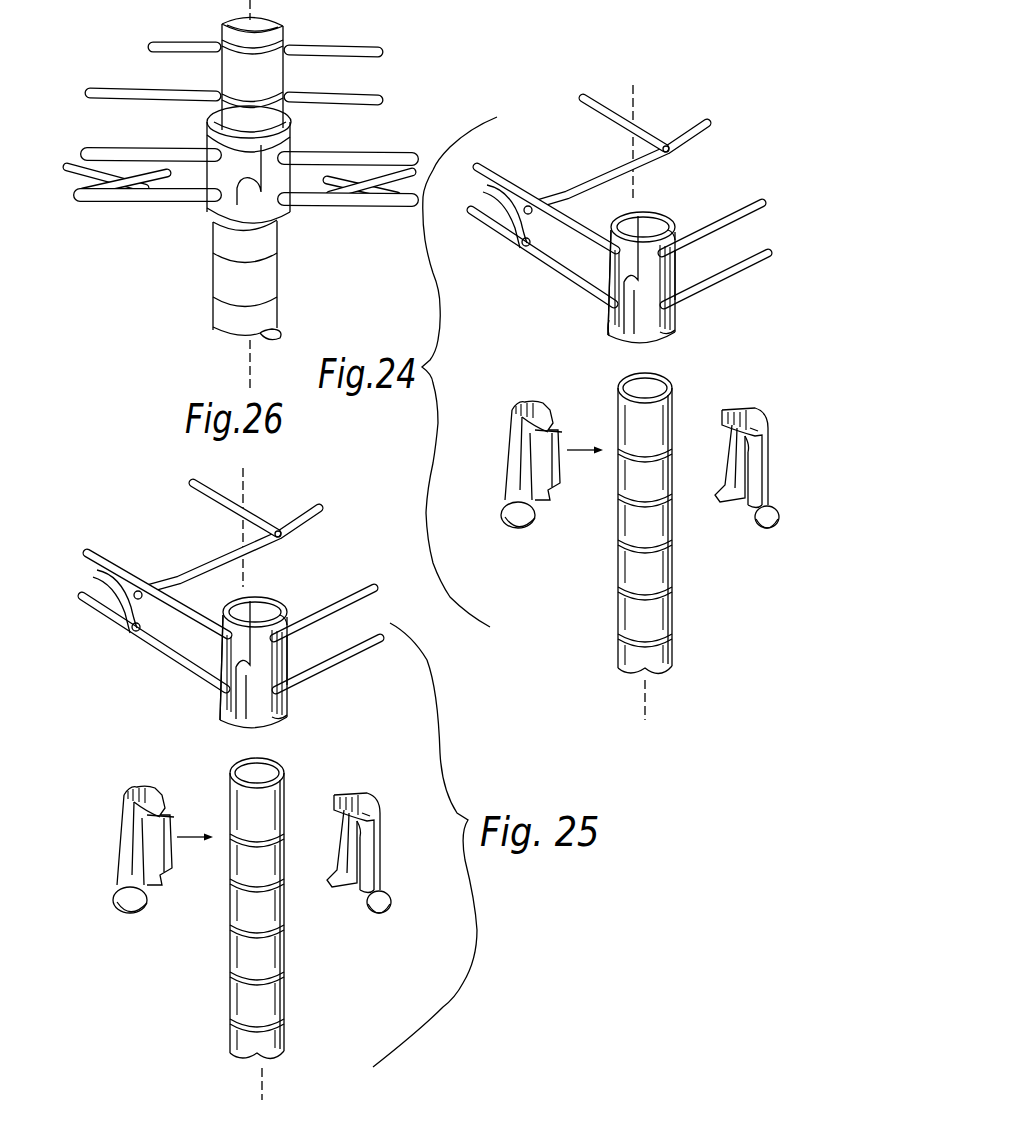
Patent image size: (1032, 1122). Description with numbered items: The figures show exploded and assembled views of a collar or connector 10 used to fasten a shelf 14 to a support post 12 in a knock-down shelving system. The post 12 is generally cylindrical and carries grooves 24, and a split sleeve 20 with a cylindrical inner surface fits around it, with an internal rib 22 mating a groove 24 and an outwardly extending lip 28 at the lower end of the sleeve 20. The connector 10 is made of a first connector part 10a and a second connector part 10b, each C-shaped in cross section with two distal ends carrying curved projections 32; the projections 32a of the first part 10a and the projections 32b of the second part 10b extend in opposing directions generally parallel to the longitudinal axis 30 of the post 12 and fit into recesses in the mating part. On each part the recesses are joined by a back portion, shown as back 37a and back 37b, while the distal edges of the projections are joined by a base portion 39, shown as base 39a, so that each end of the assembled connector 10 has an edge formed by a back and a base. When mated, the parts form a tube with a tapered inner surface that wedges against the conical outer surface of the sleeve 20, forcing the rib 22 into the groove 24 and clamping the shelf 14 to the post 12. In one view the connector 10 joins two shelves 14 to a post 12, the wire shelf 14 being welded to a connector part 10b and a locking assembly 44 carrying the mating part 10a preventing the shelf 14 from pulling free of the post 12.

In FIG. 26, the collar or connector 10 is at (222, 215).
In FIG. 24, the first connector part 10a is at (672, 331).
In FIG. 25, the first connector part 10a is at (288, 717).
In FIG. 24, the second connector part 10b is at (613, 329).
In FIG. 25, the second connector part 10b is at (228, 714).
In FIG. 26, the support post 12 is at (220, 68).
In FIG. 24, the support post 12 is at (617, 557).
In FIG. 25, the support post 12 is at (230, 953).
In FIG. 26, the shelf 14 is at (390, 157).
In FIG. 24, the shelf 14 is at (650, 127).
In FIG. 25, the shelf 14 is at (253, 515).
In FIG. 26, the sleeve 20 is at (282, 98).
In FIG. 24, the sleeve 20 is at (511, 470).
In FIG. 25, the sleeve 20 is at (122, 857).
In FIG. 24, the rib 22 is at (552, 434).
In FIG. 25, the rib 22 is at (164, 819).
In FIG. 26, the groove 24 is at (277, 50).
In FIG. 24, the groove 24 is at (673, 587).
In FIG. 25, the groove 24 is at (282, 970).
In FIG. 26, the lip 28 is at (268, 212).
In FIG. 24, the lip 28 is at (504, 521).
In FIG. 25, the lip 28 is at (116, 906).
In FIG. 26, the longitudinal axis 30 is at (247, 362).
In FIG. 24, the longitudinal axis 30 is at (638, 175).
In FIG. 25, the longitudinal axis 30 is at (247, 563).
In FIG. 26, the projection 32 is at (252, 179).
In FIG. 24, the first projection 32a is at (634, 330).
In FIG. 25, the first projection 32a is at (222, 622).
In FIG. 24, the second projection 32b is at (682, 248).
In FIG. 25, the second projection 32b is at (262, 675).
In FIG. 24, the back portion of first connector part 37a is at (673, 233).
In FIG. 25, the back portion of first connector part 37a is at (277, 720).
In FIG. 24, the back portion of second connector part 37b is at (608, 328).
In FIG. 25, the back portion of second connector part 37b is at (220, 648).
In FIG. 24, the base portion 39 is at (610, 232).
In FIG. 24, the base portion of first connector part 39a is at (663, 332).
In FIG. 25, the base portion of first connector part 39a is at (277, 627).
In FIG. 24, the locking assembly 44 is at (731, 283).
In FIG. 25, the locking assembly 44 is at (339, 611).